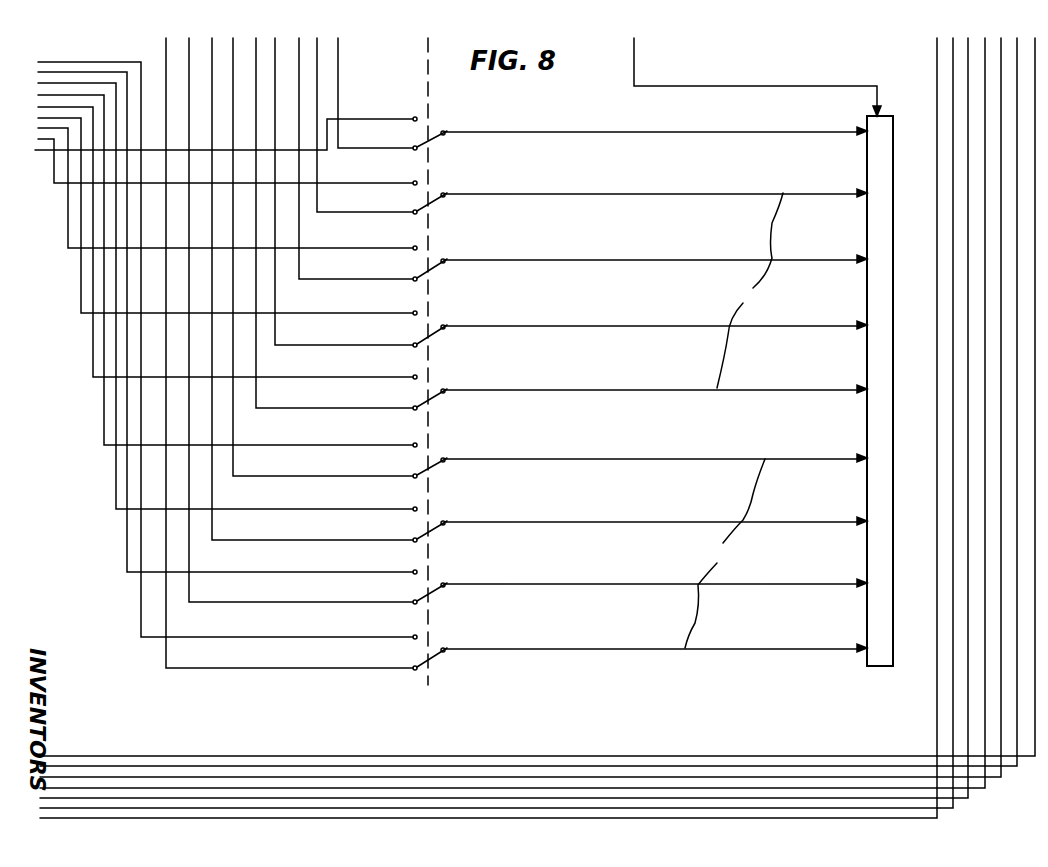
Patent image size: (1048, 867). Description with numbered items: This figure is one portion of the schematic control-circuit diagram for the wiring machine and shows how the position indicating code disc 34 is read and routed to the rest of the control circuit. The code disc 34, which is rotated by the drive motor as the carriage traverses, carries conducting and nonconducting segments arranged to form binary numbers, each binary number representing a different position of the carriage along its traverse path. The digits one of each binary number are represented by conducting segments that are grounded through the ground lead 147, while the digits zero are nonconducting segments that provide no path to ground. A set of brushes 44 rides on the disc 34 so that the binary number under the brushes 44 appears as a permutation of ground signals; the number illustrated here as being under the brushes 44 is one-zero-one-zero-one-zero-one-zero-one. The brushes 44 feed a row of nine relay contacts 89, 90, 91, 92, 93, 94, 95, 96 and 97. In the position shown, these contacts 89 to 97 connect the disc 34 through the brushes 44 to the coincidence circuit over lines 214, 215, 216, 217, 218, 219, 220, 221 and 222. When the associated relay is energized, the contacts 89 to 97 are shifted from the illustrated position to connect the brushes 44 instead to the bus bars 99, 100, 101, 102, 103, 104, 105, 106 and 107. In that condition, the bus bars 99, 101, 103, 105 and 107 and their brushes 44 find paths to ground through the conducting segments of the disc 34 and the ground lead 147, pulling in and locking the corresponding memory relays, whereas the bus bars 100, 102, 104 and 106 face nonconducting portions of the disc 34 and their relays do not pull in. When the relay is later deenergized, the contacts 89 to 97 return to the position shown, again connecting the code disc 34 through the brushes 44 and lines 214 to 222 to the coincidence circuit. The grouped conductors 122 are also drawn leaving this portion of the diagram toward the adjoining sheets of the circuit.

The bus bar 99 is at (415, 111).
The bus bar 100 is at (395, 175).
The bus bar 101 is at (382, 240).
The bus bar 102 is at (382, 305).
The bus bar 103 is at (377, 369).
The bus bar 104 is at (379, 437).
The bus bar 105 is at (375, 501).
The bus bar 106 is at (374, 564).
The bus bar 107 is at (369, 629).
The line 214 is at (397, 143).
The line 215 is at (387, 207).
The line 216 is at (380, 274).
The line 217 is at (380, 340).
The line 218 is at (370, 403).
The line 219 is at (372, 471).
The line 220 is at (375, 535).
The line 221 is at (369, 597).
The line 222 is at (367, 663).
The contacts 89 is at (432, 138).
The contacts 90 is at (432, 200).
The contacts 91 is at (432, 266).
The contacts 92 is at (432, 332).
The contacts 93 is at (432, 396).
The contacts 94 is at (432, 465).
The contacts 95 is at (432, 528).
The contacts 96 is at (432, 590).
The contacts 97 is at (432, 655).
The position indicating code disc 34 is at (882, 371).
The brushes 44 is at (734, 420).
The ground lead 147 is at (752, 83).
The bus conductors 122 is at (542, 430).